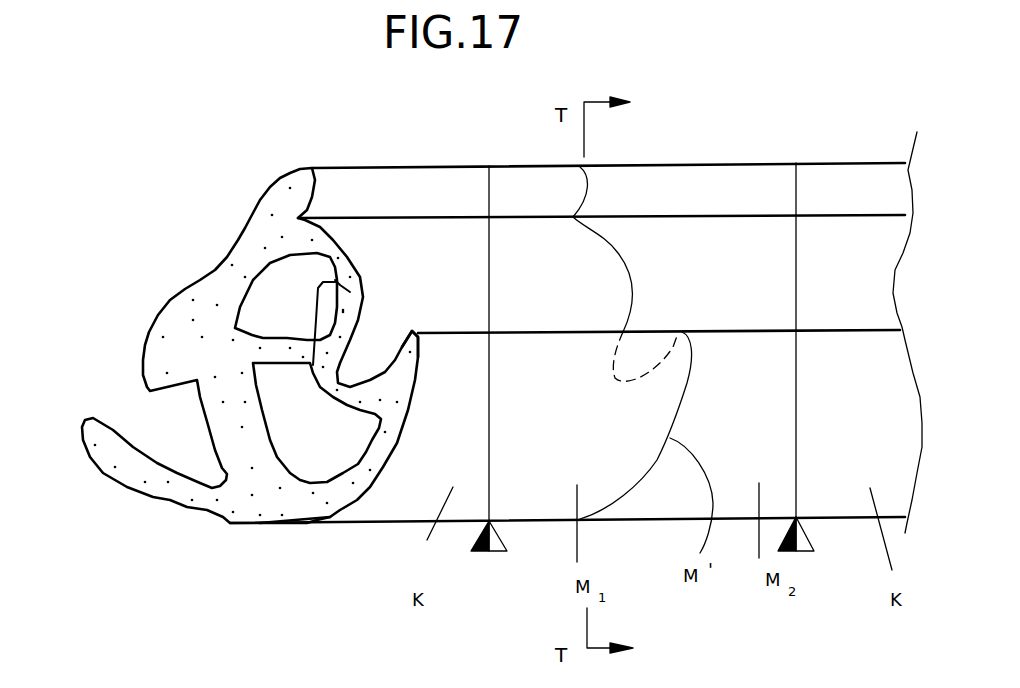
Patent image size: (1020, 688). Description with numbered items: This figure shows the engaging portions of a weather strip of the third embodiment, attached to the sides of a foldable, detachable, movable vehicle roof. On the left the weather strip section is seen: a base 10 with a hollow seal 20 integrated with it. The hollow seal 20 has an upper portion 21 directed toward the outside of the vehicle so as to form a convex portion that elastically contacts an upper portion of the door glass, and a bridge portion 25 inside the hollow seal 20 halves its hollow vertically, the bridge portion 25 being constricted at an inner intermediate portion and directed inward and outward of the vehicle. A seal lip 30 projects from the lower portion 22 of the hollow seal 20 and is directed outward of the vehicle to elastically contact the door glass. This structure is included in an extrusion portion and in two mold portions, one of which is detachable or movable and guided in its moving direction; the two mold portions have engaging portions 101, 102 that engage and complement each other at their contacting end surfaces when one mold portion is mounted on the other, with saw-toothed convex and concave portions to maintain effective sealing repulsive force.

The base 10 is at (255, 262).
The hollow seal 20 is at (270, 438).
The upper portion 21 is at (273, 308).
The lower portion 22 is at (300, 456).
The bridge portion 25 is at (292, 353).
The seal lip 30 is at (398, 375).
The engaging portion 101 is at (613, 470).
The engaging portion 102 is at (660, 500).